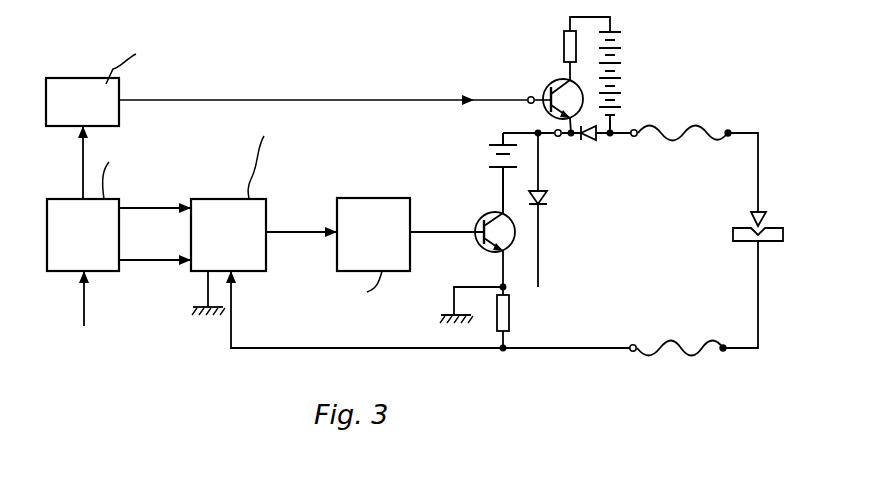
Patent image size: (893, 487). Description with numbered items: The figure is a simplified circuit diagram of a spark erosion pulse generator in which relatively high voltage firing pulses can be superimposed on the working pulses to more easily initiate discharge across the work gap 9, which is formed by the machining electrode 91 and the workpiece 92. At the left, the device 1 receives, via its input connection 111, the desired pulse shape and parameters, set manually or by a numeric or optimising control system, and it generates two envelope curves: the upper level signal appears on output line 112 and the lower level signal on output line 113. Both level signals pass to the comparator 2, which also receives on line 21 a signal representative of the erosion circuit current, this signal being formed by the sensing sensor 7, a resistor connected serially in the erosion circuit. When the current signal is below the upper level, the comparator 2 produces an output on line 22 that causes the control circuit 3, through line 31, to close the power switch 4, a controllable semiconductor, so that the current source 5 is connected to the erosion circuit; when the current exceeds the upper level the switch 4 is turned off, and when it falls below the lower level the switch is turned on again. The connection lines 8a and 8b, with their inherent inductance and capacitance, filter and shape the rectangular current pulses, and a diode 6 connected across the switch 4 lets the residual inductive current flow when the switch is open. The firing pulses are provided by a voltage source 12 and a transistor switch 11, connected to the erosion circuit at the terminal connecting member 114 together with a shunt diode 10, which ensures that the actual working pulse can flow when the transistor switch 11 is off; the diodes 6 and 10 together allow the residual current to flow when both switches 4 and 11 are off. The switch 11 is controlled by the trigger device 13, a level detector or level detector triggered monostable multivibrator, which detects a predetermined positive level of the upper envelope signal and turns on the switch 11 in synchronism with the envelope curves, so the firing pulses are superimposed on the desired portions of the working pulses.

The device 1 is at (62, 208).
The comparator 2 is at (224, 209).
The control circuit 3 is at (371, 208).
The power switch 4 is at (483, 250).
The current source 5 is at (488, 150).
The diode 6 is at (549, 204).
The sensing sensor 7 is at (510, 324).
The connection line 8a is at (694, 158).
The connection line 8b is at (694, 310).
The work gap 9 is at (750, 232).
The shunt diode 10 is at (592, 140).
The transistor switch 11 is at (552, 86).
The voltage source 12 is at (630, 75).
The trigger device 13 is at (80, 90).
The line 21 is at (430, 310).
The output line 22 is at (301, 220).
The line 31 is at (447, 220).
The machining electrode 91 is at (752, 222).
The workpiece 92 is at (745, 242).
The input connection 111 is at (84, 312).
The output line 112 is at (154, 248).
The output line 113 is at (154, 197).
The terminal connecting member 114 is at (527, 96).